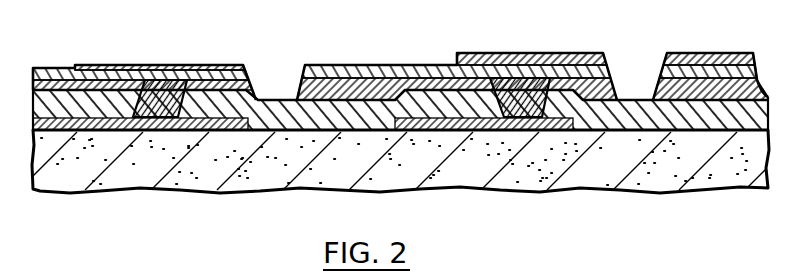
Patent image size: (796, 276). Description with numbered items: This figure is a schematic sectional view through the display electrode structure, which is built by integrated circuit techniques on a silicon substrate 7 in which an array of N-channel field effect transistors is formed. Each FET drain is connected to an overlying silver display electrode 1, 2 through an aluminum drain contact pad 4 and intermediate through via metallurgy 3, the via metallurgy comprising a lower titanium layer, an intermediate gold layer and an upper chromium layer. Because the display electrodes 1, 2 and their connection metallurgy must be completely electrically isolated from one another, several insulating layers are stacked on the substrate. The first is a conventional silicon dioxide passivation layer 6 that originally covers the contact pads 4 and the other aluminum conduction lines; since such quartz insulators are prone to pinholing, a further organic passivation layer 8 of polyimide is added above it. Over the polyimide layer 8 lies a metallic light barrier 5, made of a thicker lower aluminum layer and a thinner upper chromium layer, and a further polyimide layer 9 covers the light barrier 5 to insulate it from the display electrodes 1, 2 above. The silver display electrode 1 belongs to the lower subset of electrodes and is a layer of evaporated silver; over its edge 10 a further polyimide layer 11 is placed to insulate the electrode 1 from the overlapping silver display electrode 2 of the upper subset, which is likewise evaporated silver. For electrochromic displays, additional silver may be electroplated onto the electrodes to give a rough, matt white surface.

The silver display electrode 1 is at (343, 65).
The silver display electrode 2 is at (553, 53).
The through via metallurgy 3 is at (229, 138).
The aluminum drain contact pad 4 is at (137, 133).
The metallic light barrier 5 is at (135, 66).
The silicon dioxide passivation layer 6 is at (338, 133).
The silicon substrate 7 is at (510, 178).
The organic passivation layer 8 is at (50, 80).
The polyimide layer 9 is at (200, 72).
The edge of the electrode 10 is at (467, 53).
The polyimide layer 11 is at (580, 55).